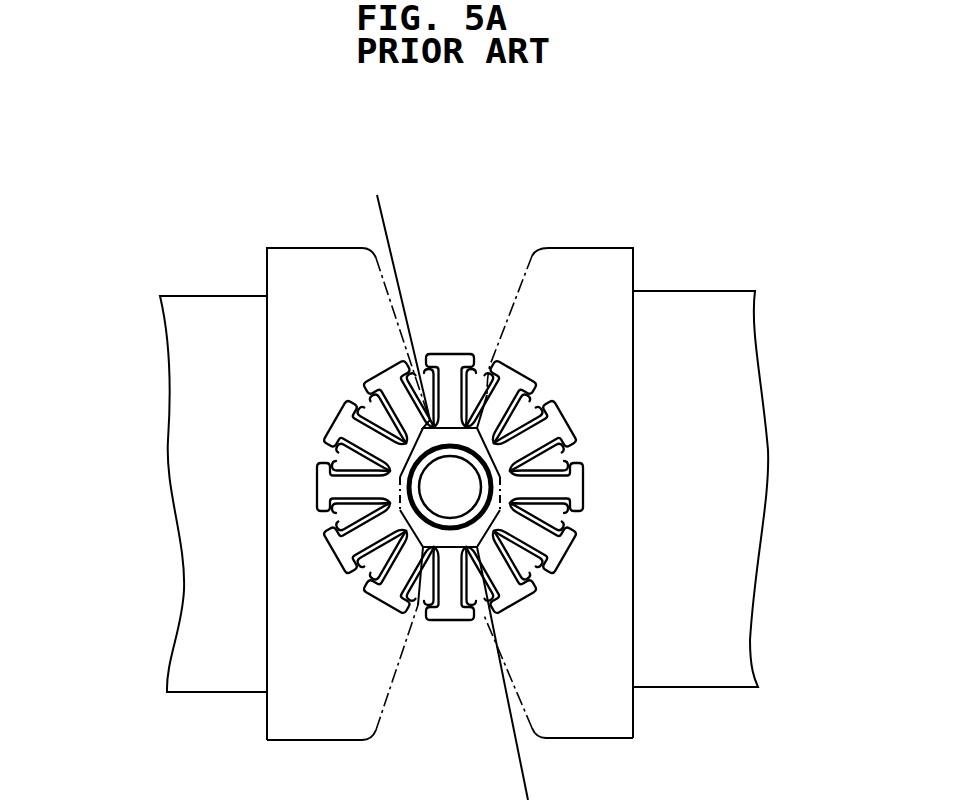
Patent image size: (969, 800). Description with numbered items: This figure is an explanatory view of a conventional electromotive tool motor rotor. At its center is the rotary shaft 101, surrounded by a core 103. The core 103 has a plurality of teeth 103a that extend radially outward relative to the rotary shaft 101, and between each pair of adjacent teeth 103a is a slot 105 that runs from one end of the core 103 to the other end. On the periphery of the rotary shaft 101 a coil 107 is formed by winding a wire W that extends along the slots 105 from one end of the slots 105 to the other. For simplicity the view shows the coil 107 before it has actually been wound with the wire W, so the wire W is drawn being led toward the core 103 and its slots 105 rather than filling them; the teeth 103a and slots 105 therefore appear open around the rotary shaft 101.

The rotary shaft 101 is at (440, 487).
The core 103 is at (462, 340).
The teeth 103a is at (318, 496).
The slots 105 is at (347, 522).
The coil 107 is at (422, 592).
The wire W is at (388, 226).